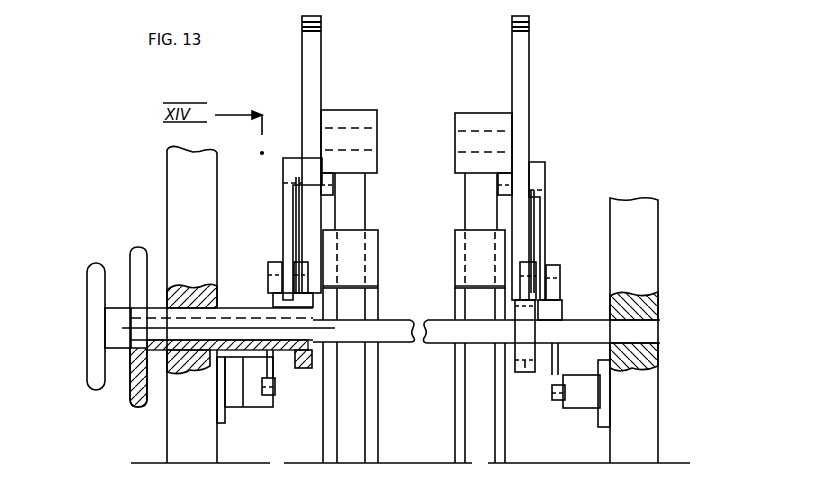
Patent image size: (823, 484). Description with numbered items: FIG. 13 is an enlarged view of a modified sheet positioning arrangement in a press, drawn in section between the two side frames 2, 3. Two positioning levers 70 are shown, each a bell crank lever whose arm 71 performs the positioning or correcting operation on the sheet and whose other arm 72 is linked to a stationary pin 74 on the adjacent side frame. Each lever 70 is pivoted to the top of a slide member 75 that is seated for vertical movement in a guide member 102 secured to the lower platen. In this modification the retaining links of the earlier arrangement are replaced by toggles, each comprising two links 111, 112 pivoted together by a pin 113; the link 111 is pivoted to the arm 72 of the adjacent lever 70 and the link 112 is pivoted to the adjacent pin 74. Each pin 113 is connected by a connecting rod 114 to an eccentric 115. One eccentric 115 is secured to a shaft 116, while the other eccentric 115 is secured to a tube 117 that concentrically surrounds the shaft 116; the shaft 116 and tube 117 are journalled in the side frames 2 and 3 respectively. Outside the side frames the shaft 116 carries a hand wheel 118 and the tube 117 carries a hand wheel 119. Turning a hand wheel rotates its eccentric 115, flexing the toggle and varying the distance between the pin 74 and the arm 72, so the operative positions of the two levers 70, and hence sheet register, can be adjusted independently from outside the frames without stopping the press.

The side frame 2 is at (652, 257).
The side frame 3 is at (170, 192).
The positioning lever 70 is at (302, 94).
The arm 71 is at (321, 58).
The arm 72 is at (322, 184).
The stationary pin 74 is at (277, 390).
The slide member 75 is at (362, 216).
The guide member 102 is at (378, 272).
The link 111 is at (283, 215).
The link 112 is at (275, 302).
The pin 113 is at (268, 277).
The connecting rod 114 is at (300, 262).
The eccentric 115 is at (305, 368).
The shaft 116 is at (432, 348).
The tube 117 is at (250, 350).
The hand wheel 118 is at (96, 392).
The hand wheel 119 is at (137, 408).